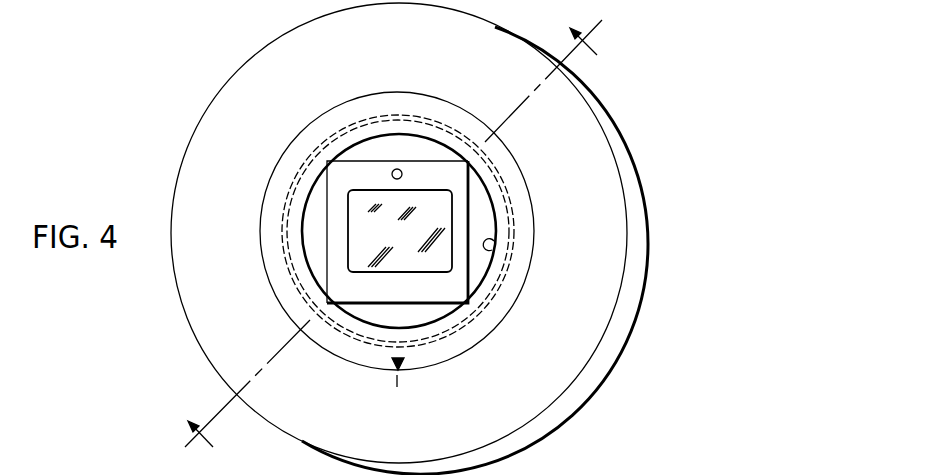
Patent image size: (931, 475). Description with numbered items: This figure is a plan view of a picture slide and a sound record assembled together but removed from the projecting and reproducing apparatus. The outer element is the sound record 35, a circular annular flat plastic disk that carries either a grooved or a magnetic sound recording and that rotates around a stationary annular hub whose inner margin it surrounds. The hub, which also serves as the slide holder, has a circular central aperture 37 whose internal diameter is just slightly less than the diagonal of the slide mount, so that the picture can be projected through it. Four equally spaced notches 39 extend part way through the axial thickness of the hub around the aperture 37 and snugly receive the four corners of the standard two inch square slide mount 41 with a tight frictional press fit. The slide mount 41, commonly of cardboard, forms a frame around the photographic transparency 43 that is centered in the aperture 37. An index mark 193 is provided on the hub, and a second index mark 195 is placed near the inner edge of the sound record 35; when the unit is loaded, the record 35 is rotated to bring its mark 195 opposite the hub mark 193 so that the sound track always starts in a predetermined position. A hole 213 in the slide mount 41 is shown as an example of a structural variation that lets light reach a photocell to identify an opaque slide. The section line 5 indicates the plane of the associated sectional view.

The section line 5- 5 is at (398, 243).
The sound record 35 is at (595, 321).
The central aperture 37 is at (492, 250).
The notches 39 is at (330, 315).
The slide mount 41 is at (460, 183).
The photographic transparency 43 is at (427, 203).
The index mark 193 is at (394, 366).
The index mark 195 is at (402, 382).
The hole 213 is at (393, 170).